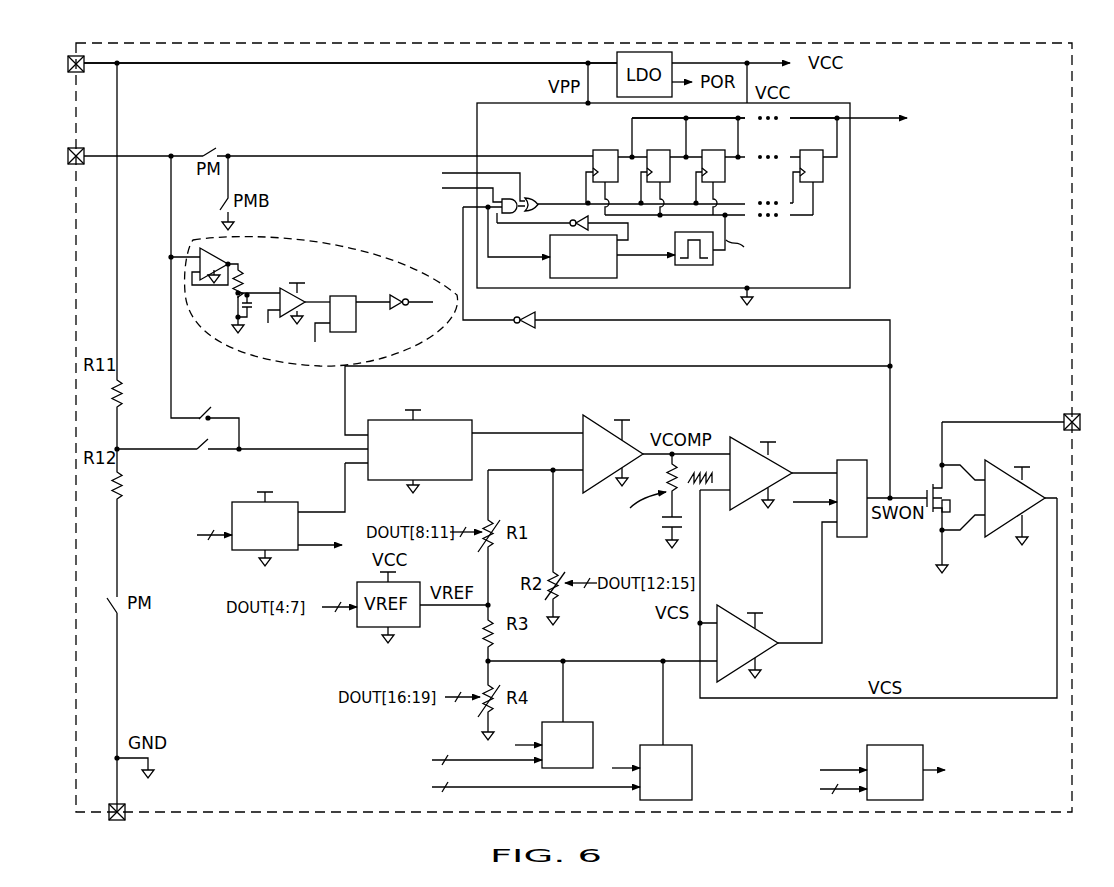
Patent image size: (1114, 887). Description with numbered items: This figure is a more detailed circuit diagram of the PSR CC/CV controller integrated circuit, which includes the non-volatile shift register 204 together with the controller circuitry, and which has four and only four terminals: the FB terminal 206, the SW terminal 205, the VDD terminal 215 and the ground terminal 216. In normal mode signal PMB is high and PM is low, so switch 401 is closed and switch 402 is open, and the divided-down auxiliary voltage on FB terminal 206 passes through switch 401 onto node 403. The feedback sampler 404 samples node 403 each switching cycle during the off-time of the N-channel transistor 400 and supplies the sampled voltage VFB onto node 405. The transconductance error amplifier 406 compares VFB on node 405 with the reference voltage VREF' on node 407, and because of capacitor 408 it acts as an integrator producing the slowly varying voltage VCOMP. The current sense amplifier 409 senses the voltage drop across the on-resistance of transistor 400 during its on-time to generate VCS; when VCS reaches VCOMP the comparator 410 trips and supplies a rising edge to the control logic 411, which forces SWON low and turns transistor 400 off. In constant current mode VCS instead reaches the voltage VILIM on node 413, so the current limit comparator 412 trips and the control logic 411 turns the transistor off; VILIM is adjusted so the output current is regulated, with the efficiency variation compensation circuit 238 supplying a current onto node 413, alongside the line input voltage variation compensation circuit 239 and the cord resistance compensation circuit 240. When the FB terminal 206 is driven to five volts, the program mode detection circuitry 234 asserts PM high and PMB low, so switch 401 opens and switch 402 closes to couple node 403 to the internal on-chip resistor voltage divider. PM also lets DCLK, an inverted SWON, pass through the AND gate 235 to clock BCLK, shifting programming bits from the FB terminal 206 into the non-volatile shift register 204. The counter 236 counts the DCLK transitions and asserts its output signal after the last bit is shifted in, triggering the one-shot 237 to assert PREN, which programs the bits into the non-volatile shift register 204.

The non-volatile shift register 204 is at (727, 210).
The SW terminal 205 is at (1064, 413).
The FB terminal 206 is at (74, 165).
The VDD terminal 215 is at (74, 73).
The ground terminal 216 is at (126, 808).
The program mode detection circuitry 234 is at (338, 255).
The AND gate 235 is at (514, 214).
The counter 236 is at (588, 278).
The one-shot 237 is at (713, 262).
The efficiency variation compensation circuit 238 is at (590, 722).
The line input voltage variation compensation circuit 239 is at (680, 745).
The cord resistance compensation circuit 240 is at (900, 745).
The N-channel transistor 400 is at (928, 528).
The switch 401 is at (206, 410).
The switch 402 is at (204, 462).
The node 403 is at (298, 502).
The feedback sampler 404 is at (476, 420).
The node 405 is at (552, 433).
The transconductance error amplifier 406 is at (616, 438).
The node 407 is at (568, 472).
The capacitor 408 is at (666, 530).
The current sense amplifier 409 is at (999, 524).
The comparator 410 is at (749, 448).
The control logic 411 is at (850, 537).
The current limit comparator 412 is at (768, 602).
The node 413 is at (641, 660).